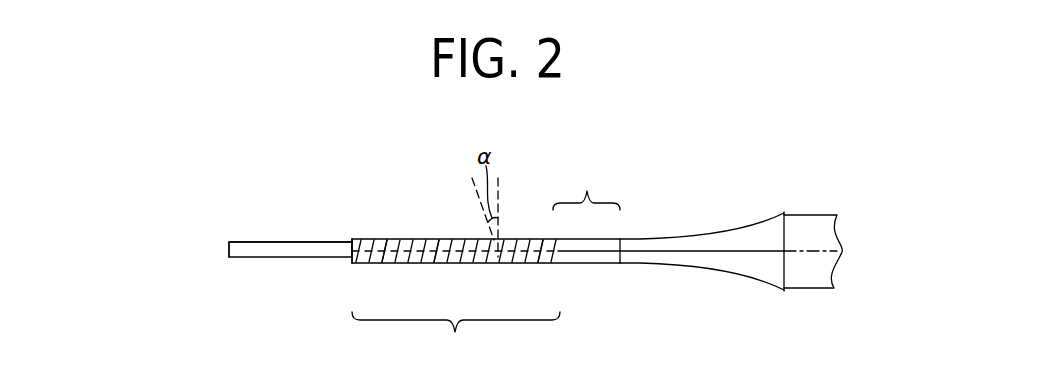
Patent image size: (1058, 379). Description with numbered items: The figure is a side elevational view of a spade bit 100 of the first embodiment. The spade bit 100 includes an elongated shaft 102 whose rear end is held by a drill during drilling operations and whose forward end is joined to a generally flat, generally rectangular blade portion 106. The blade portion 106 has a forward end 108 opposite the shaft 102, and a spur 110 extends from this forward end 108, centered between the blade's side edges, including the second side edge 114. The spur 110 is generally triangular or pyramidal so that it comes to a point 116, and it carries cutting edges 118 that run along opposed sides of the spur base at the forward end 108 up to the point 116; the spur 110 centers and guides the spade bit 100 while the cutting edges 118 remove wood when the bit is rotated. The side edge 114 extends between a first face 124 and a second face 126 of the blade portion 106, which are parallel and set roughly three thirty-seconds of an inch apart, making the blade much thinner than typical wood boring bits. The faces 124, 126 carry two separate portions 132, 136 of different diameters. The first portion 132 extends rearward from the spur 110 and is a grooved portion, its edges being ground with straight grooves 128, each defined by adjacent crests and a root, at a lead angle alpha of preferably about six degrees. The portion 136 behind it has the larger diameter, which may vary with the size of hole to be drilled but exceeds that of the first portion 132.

The spade bit 100 is at (650, 172).
The elongated shaft 102 is at (803, 220).
The blade portion 106 is at (586, 234).
The forward end 108 is at (353, 240).
The spur 110 is at (289, 270).
The second side edge 114 is at (383, 254).
The point 116 is at (228, 248).
The cutting edges 118 is at (253, 250).
The first face 124 is at (418, 238).
The second face 126 is at (433, 263).
The grooves 128 is at (543, 256).
The first portion 132 is at (456, 340).
The portion 136 is at (586, 183).